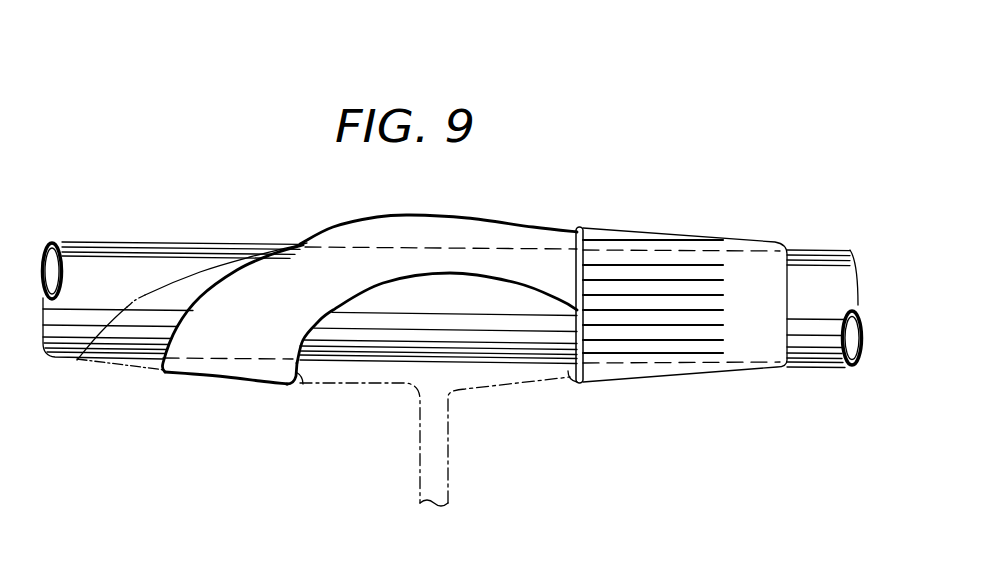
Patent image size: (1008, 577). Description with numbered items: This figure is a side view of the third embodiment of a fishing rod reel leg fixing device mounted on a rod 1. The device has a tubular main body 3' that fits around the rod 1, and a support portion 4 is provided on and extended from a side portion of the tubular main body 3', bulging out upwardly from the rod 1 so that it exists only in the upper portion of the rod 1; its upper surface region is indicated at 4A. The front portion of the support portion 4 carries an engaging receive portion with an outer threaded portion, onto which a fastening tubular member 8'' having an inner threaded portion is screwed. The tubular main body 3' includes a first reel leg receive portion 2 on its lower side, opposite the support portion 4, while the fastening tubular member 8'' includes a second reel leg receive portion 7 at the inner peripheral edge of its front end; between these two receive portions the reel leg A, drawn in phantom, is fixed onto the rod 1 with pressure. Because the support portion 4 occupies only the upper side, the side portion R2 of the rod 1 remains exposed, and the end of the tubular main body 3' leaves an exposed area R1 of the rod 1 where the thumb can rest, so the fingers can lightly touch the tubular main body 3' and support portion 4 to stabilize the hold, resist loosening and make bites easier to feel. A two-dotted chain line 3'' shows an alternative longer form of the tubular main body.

The rod 1 is at (105, 263).
The two-dotted chain line 3'' is at (192, 268).
The exposed area R1 is at (252, 253).
The coupling body top portion 4A is at (427, 232).
The support portion 4 is at (369, 305).
The fastening tubular member 8'' is at (681, 274).
The tubular main body 3' is at (228, 391).
The first reel leg receive portion 2 is at (303, 387).
The side portion R2 is at (402, 317).
The reel leg A is at (450, 420).
The second reel leg receive portion 7 is at (570, 373).